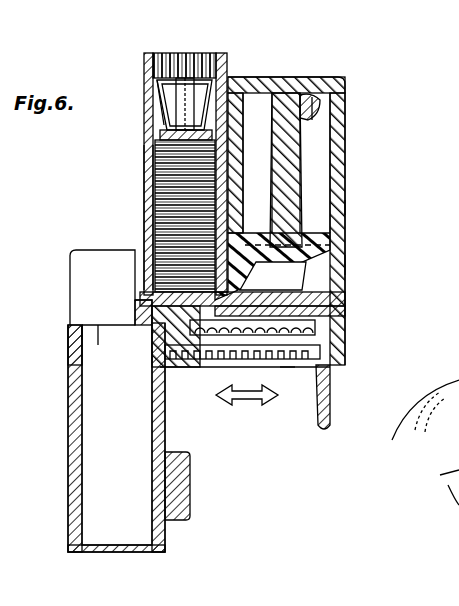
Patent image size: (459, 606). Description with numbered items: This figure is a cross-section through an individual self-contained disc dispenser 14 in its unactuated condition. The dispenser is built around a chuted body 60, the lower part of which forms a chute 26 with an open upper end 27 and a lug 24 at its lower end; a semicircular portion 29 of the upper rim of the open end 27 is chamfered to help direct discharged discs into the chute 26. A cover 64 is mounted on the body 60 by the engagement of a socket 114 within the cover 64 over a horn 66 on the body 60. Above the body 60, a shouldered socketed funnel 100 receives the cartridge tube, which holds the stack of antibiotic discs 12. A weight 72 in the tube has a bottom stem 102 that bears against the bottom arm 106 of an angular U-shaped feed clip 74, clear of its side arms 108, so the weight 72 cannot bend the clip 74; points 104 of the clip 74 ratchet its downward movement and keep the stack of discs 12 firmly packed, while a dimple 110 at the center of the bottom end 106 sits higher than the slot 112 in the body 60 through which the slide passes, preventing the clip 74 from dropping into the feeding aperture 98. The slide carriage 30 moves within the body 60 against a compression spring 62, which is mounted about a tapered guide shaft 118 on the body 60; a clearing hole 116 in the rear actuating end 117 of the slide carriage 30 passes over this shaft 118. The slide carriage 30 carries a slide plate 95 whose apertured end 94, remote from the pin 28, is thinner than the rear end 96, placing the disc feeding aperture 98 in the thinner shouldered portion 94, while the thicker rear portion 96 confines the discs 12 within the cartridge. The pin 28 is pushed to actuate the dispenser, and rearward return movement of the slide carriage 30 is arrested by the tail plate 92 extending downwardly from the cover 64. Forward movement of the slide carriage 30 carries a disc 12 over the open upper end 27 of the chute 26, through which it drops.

The antibiotic disc 12 is at (157, 194).
The self-contained disc dispenser 14 is at (368, 208).
The lug 24 is at (180, 500).
The chute 26 is at (70, 450).
The open upper end of chute 27 is at (98, 340).
The pin 28 is at (330, 410).
The semicircular portion of upper rim 29 is at (80, 333).
The slide carriage 30 is at (250, 293).
The chuted body 60 is at (68, 362).
The compression spring 62 is at (288, 372).
The cover 64 is at (347, 126).
The horn 66 is at (297, 180).
The weight 72 is at (188, 60).
The feed clip 74 is at (170, 112).
The tail plate 92 is at (320, 296).
The apertured end of slide plate 94 is at (140, 327).
The slide plate 95 is at (345, 309).
The rear end of slide plate 96 is at (346, 265).
The disc feeding aperture 98 is at (226, 68).
The shouldered socketed funnel 100 is at (150, 287).
The bottom stem 102 is at (202, 75).
The points of clip 104 is at (150, 90).
The bottom arm of clip 106 is at (157, 160).
The side arms of clip 108 is at (150, 95).
The dimple 110 is at (150, 172).
The slot 112 is at (141, 273).
The socket 114 is at (312, 97).
The clearing hole 116 is at (332, 380).
The rear actuating end 117 is at (345, 323).
The tapered guide shaft 118 is at (193, 372).